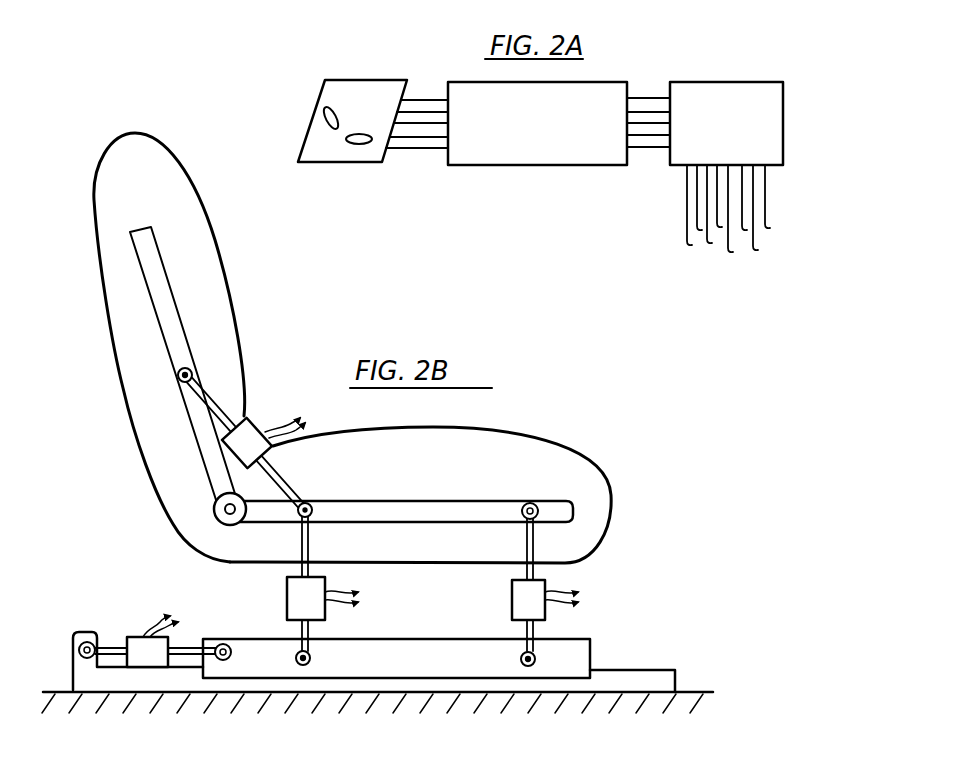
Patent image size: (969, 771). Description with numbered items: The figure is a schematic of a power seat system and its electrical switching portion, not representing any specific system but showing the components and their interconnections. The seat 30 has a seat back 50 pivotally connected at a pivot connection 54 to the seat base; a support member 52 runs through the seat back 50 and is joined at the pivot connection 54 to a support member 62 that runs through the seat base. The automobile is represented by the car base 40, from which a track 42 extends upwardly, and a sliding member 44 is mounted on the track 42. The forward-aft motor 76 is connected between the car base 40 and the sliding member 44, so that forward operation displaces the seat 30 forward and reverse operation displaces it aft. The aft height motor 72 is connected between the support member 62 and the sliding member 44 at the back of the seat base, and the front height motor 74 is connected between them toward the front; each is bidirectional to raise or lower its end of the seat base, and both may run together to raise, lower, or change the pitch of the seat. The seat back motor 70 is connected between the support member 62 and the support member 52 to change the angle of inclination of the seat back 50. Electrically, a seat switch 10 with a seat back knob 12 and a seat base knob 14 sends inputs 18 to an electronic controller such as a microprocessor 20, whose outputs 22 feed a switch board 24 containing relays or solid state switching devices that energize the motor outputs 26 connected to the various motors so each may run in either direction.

In FIG. 2A, the seat switch 10 is at (306, 79).
In FIG. 2A, the seat back knob 12 is at (323, 124).
In FIG. 2A, the seat base knob 14 is at (356, 145).
In FIG. 2A, the inputs 18 is at (417, 112).
In FIG. 2A, the microprocessor 20 is at (537, 166).
In FIG. 2A, the outputs 22 is at (653, 123).
In FIG. 2A, the switch board 24 is at (730, 82).
In FIG. 2A, the motor outputs 26 is at (728, 200).
In FIG. 2B, the seat 30 is at (119, 431).
In FIG. 2B, the car base 40 is at (697, 692).
In FIG. 2B, the track 42 is at (625, 670).
In FIG. 2B, the sliding member 44 is at (578, 640).
In FIG. 2B, the seat back 50 is at (150, 133).
In FIG. 2B, the support member 52 is at (157, 241).
In FIG. 2B, the pivot connection 54 is at (216, 504).
In FIG. 2B, the support member 62 is at (588, 463).
In FIG. 2B, the seat back motor 70 is at (258, 418).
In FIG. 2B, the aft height motor 72 is at (287, 593).
In FIG. 2B, the front height motor 74 is at (512, 600).
In FIG. 2B, the forward-aft motor 76 is at (137, 637).